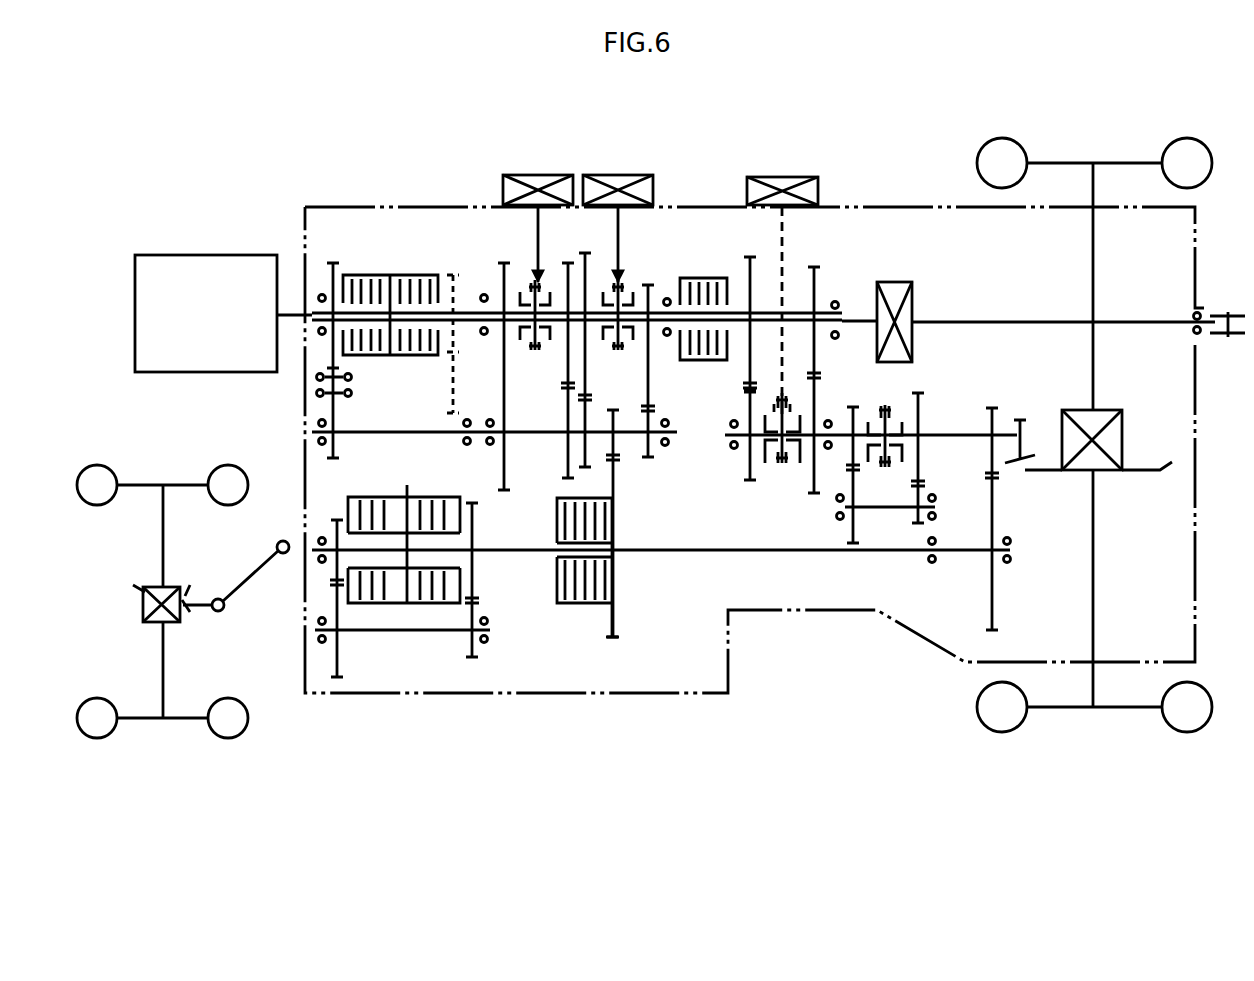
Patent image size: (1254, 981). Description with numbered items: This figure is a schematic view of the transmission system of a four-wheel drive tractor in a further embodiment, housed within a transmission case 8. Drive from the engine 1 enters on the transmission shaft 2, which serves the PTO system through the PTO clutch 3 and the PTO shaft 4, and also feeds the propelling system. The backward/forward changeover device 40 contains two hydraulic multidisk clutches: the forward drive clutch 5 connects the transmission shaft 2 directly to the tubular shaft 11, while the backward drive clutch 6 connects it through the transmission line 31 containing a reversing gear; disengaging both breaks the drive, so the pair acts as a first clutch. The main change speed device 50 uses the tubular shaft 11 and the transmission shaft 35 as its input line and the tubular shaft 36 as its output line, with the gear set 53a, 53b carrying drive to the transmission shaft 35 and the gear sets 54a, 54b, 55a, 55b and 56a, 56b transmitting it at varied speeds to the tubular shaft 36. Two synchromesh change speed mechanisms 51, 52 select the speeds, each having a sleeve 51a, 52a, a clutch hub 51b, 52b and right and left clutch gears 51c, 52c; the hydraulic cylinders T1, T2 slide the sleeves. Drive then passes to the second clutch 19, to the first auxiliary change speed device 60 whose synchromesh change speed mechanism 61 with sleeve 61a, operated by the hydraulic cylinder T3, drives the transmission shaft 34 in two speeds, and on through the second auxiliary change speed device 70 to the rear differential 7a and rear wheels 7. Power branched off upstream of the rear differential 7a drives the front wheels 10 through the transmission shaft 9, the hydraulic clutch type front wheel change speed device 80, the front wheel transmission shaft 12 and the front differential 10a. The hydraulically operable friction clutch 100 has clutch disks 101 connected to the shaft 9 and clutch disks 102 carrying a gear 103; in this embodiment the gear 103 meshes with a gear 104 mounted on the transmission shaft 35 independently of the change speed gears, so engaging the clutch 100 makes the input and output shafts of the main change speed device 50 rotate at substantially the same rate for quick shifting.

The engine 1 is at (205, 255).
The transmission shaft 2 is at (860, 314).
The PTO clutch 3 is at (914, 300).
The PTO shaft 4 is at (1008, 320).
The forward drive clutch 5 is at (420, 276).
The backward drive clutch 6 is at (348, 276).
The rear wheels 7 is at (1128, 164).
The rear differential 7a is at (1120, 410).
The transmission case 8 is at (443, 694).
The transmission shaft 9 is at (880, 553).
The front wheels 10 is at (147, 480).
The front differential 10a is at (183, 625).
The tubular shaft 11 is at (466, 358).
The front wheel transmission shaft 12 is at (256, 580).
The second clutch 19 is at (750, 259).
The transmission line 31 is at (392, 438).
The transmission shaft 34 is at (750, 462).
The transmission shaft 35 is at (502, 443).
The tubular shaft 36 is at (812, 268).
The backward/forward changeover device 40 is at (390, 248).
The main change speed device 50 is at (578, 250).
The synchromesh change speed mechanism 51 is at (521, 263).
The sleeve 51a is at (534, 284).
The clutch hub 51b is at (535, 350).
The clutch gears 51c is at (585, 258).
The synchromesh change speed mechanism 52 is at (655, 291).
The sleeve 52a is at (654, 246).
The clutch hub 52b is at (648, 296).
The clutch gears 52c is at (626, 418).
The gear 53a is at (504, 262).
The gear 53b is at (503, 491).
The gear 54a is at (543, 347).
The gear 54b is at (568, 440).
The gear 55a is at (590, 250).
The gear 55b is at (614, 474).
The gear 56a is at (655, 290).
The change speed gear 56b is at (722, 361).
The first auxiliary change speed device 60 is at (777, 494).
The synchromesh change speed mechanism 61 is at (775, 486).
The sleeve 61a is at (783, 470).
The second auxiliary change speed device 70 is at (878, 398).
The front wheel change speed device 80 is at (400, 606).
The hydraulically operable friction clutch 100 is at (581, 590).
The clutch disks 101 is at (558, 600).
The clutch disks 102 is at (558, 558).
The gear 103 is at (615, 612).
The gear 104 is at (616, 454).
The hydraulic cylinder T1 is at (540, 174).
The hydraulic cylinder T2 is at (638, 174).
The hydraulic cylinder T3 is at (782, 176).